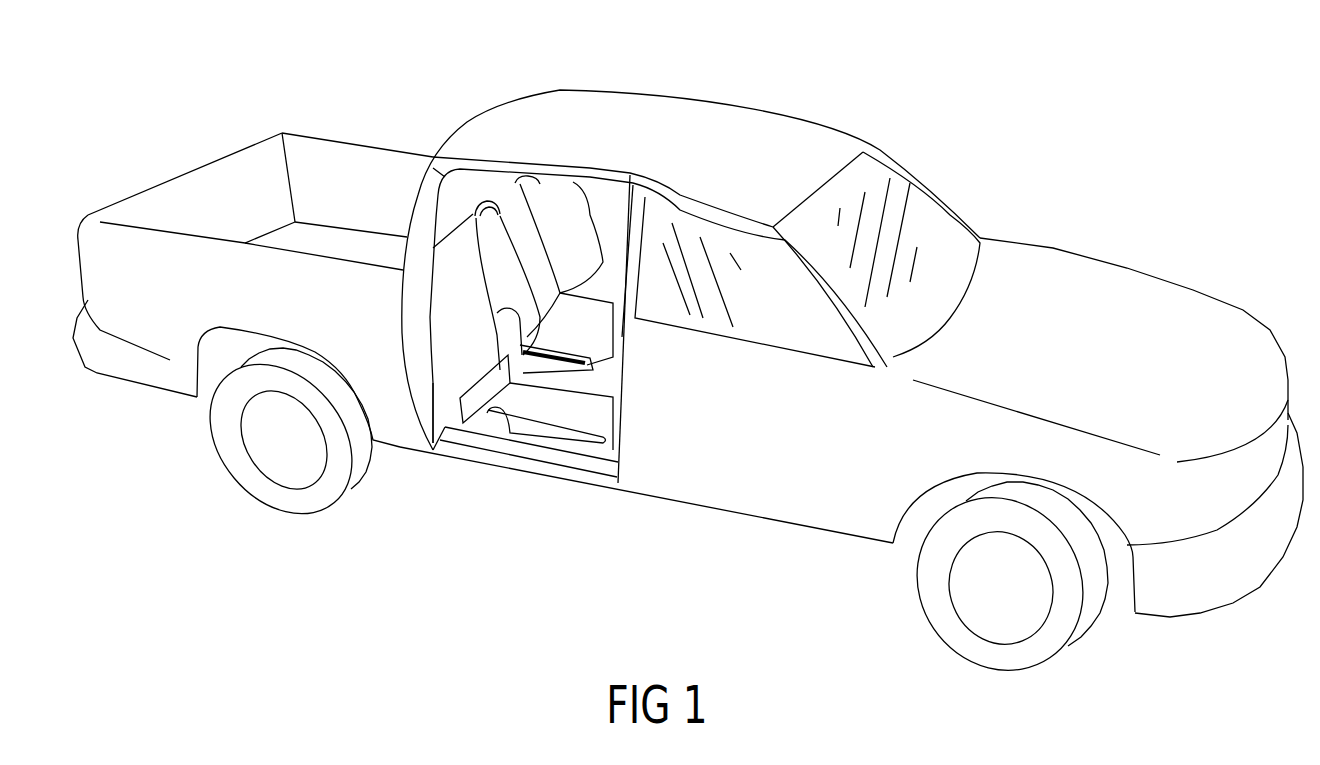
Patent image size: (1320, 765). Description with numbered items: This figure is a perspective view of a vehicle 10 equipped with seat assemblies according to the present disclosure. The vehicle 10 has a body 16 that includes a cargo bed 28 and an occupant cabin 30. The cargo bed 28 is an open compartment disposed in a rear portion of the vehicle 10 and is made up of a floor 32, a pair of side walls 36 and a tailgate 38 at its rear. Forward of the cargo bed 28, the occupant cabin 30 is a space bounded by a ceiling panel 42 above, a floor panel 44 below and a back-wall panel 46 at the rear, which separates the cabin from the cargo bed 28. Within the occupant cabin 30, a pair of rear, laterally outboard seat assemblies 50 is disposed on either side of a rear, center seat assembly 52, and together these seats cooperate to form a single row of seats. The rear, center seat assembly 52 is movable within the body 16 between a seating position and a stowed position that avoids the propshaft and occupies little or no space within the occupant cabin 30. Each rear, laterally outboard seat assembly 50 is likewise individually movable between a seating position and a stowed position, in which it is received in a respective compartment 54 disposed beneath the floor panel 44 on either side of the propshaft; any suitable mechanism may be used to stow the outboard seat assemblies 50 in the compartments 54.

The vehicle 10 is at (802, 78).
The body 16 is at (1058, 244).
The cargo bed 28 is at (338, 170).
The occupant cabin 30 is at (612, 198).
The floor 32 is at (323, 240).
The side walls 36 is at (373, 165).
The tailgate 38 is at (205, 188).
The ceiling panel 42 is at (500, 176).
The floor panel 44 is at (447, 428).
The back-wall panel 46 is at (445, 378).
The rear, laterally outboard seat assemblies 50 is at (590, 243).
The rear, center seat assembly 52 is at (628, 336).
The compartments 54 is at (477, 423).